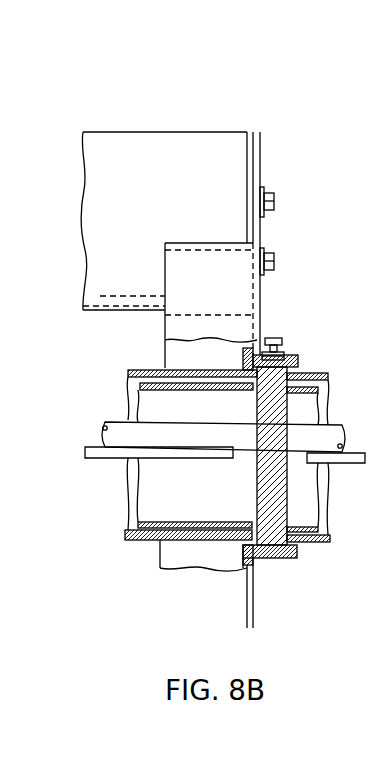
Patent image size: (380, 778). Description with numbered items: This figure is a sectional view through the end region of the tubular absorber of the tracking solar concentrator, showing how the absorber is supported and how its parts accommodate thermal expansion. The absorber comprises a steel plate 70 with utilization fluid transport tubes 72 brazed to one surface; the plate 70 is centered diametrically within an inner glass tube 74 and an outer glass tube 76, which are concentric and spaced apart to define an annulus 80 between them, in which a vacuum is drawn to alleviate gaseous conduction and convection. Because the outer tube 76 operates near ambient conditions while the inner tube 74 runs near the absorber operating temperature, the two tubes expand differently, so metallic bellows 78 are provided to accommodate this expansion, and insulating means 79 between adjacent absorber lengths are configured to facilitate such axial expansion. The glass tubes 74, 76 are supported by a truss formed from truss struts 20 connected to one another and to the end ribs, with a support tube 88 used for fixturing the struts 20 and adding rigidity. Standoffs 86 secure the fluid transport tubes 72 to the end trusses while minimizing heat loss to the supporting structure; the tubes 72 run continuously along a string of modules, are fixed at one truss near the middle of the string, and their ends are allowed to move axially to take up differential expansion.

The support tube 88 is at (173, 148).
The truss struts 20 is at (240, 292).
The annulus 80 is at (150, 373).
The insulating means 79 is at (262, 478).
The metallic bellows 78 is at (240, 388).
The utilization fluid transport tubes 72 is at (118, 433).
The steel plate 70 is at (103, 456).
The inner glass tube 74 is at (152, 522).
The outer glass tube 76 is at (125, 533).
The standoffs 86 is at (223, 558).